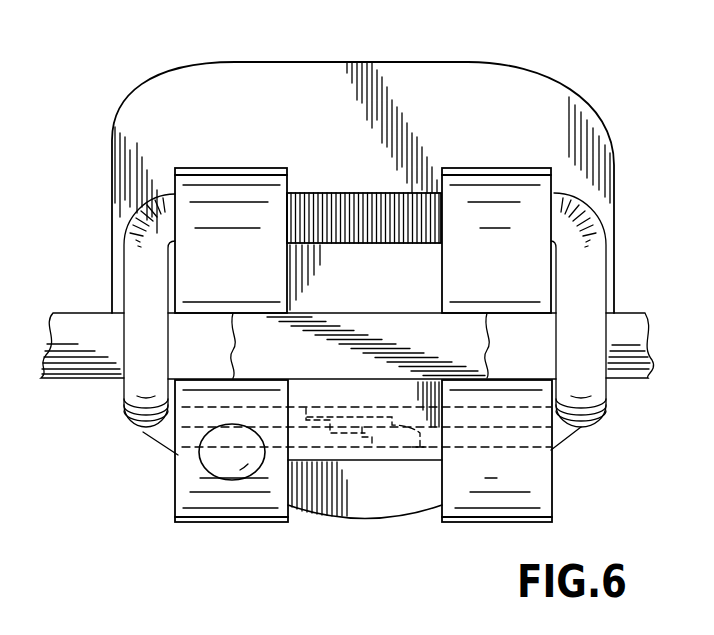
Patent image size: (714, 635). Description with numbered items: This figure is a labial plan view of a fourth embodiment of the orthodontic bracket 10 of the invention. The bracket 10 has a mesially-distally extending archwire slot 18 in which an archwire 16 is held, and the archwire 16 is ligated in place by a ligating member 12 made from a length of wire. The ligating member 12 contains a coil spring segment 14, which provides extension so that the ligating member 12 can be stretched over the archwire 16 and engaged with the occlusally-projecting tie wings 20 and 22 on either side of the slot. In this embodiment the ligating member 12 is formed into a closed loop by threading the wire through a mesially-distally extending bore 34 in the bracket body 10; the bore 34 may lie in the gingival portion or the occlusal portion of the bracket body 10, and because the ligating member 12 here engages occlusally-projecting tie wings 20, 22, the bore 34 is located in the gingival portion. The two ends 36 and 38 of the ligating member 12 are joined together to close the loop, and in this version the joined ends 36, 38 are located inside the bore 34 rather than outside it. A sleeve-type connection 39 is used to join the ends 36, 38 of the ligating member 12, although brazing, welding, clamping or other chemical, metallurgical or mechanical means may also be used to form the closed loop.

The orthodontic bracket 10 is at (170, 57).
The ligating member 12 is at (136, 438).
The coil spring segment 14 is at (342, 193).
The archwire 16 is at (196, 361).
The archwire slot 18 is at (443, 346).
The tie wing 20 is at (238, 283).
The tie wing 22 is at (504, 283).
The bore 34 is at (527, 447).
The end of ligating member 36 is at (306, 408).
The end of ligating member 38 is at (418, 450).
The sleeve-type connection 39 is at (370, 450).